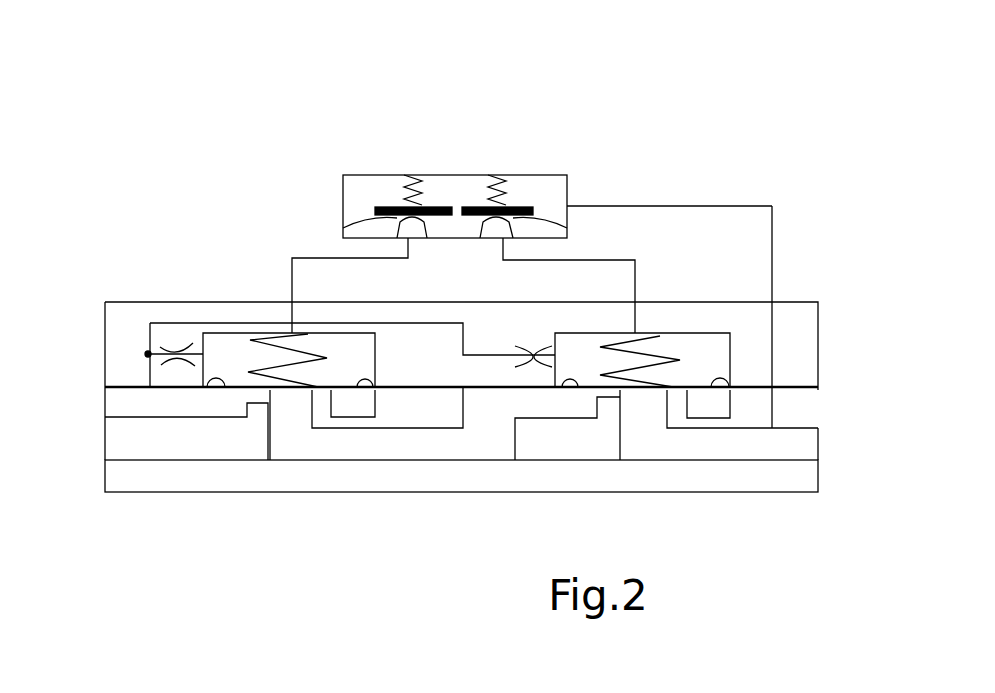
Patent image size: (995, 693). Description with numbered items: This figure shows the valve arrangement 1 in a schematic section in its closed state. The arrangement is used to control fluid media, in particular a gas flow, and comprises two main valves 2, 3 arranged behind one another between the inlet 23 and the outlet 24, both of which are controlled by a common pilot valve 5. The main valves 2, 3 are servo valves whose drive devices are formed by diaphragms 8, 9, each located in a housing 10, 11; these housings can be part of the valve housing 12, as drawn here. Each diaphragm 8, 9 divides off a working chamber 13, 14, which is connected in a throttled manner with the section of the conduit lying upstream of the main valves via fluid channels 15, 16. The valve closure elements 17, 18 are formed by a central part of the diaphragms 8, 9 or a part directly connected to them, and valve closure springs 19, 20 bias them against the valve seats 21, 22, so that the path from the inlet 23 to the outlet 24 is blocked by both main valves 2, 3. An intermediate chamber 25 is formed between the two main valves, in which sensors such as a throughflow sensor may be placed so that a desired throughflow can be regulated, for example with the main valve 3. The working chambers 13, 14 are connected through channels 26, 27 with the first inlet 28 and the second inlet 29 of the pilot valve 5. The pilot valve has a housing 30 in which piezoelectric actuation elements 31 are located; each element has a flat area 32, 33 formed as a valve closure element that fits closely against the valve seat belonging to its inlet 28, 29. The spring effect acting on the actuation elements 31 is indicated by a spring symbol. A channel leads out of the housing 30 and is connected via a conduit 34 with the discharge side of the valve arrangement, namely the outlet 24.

The valve arrangement 1 is at (675, 115).
The main valve 2 is at (246, 432).
The main valve 3 is at (605, 434).
The pilot valve 5 is at (483, 153).
The diaphragm 8 is at (280, 330).
The diaphragm 9 is at (628, 316).
The housing 10 is at (213, 310).
The housing 11 is at (665, 307).
The valve housing 12 is at (462, 478).
The working chamber 13 is at (342, 366).
The working chamber 14 is at (722, 369).
The fluid channel 15 is at (158, 343).
The fluid channel 16 is at (481, 352).
The valve closure element 17 is at (297, 392).
The valve closure element 18 is at (642, 390).
The valve closure spring 19 is at (270, 340).
The valve closure spring 20 is at (635, 340).
The valve seat 21 is at (262, 390).
The valve seat 22 is at (617, 390).
The inlet 23 is at (120, 398).
The outlet 24 is at (802, 447).
The intermediate chamber 25 is at (383, 442).
The channel 26 is at (358, 260).
The channel 27 is at (543, 260).
The first inlet 28 is at (418, 238).
The second inlet 29 is at (507, 238).
The housing 30 is at (567, 185).
The piezoelectric actuation element 31 is at (442, 200).
The flat area 32 is at (343, 228).
The flat area 33 is at (567, 228).
The conduit 34 is at (687, 205).